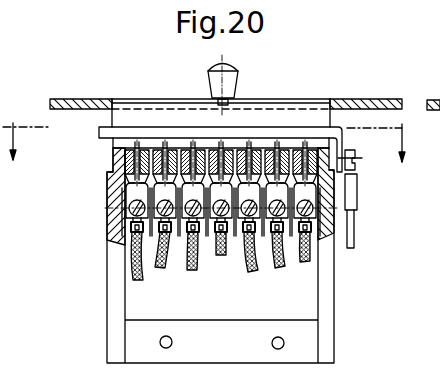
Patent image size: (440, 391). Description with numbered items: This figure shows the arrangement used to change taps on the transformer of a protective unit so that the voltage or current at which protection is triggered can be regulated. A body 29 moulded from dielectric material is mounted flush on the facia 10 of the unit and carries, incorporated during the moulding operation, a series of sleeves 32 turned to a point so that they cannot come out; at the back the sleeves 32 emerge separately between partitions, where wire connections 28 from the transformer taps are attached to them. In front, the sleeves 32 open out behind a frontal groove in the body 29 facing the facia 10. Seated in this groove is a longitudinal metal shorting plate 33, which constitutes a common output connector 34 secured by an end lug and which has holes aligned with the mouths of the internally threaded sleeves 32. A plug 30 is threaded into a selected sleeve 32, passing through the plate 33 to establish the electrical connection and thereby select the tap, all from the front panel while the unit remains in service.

The facia 10 is at (77, 100).
The wire connections 28 is at (187, 260).
The moulded body 29 is at (118, 143).
The plug 30 is at (232, 82).
The sleeves 32 is at (128, 188).
The metal shorting plate 33 is at (292, 128).
The common output connector 34 is at (353, 193).